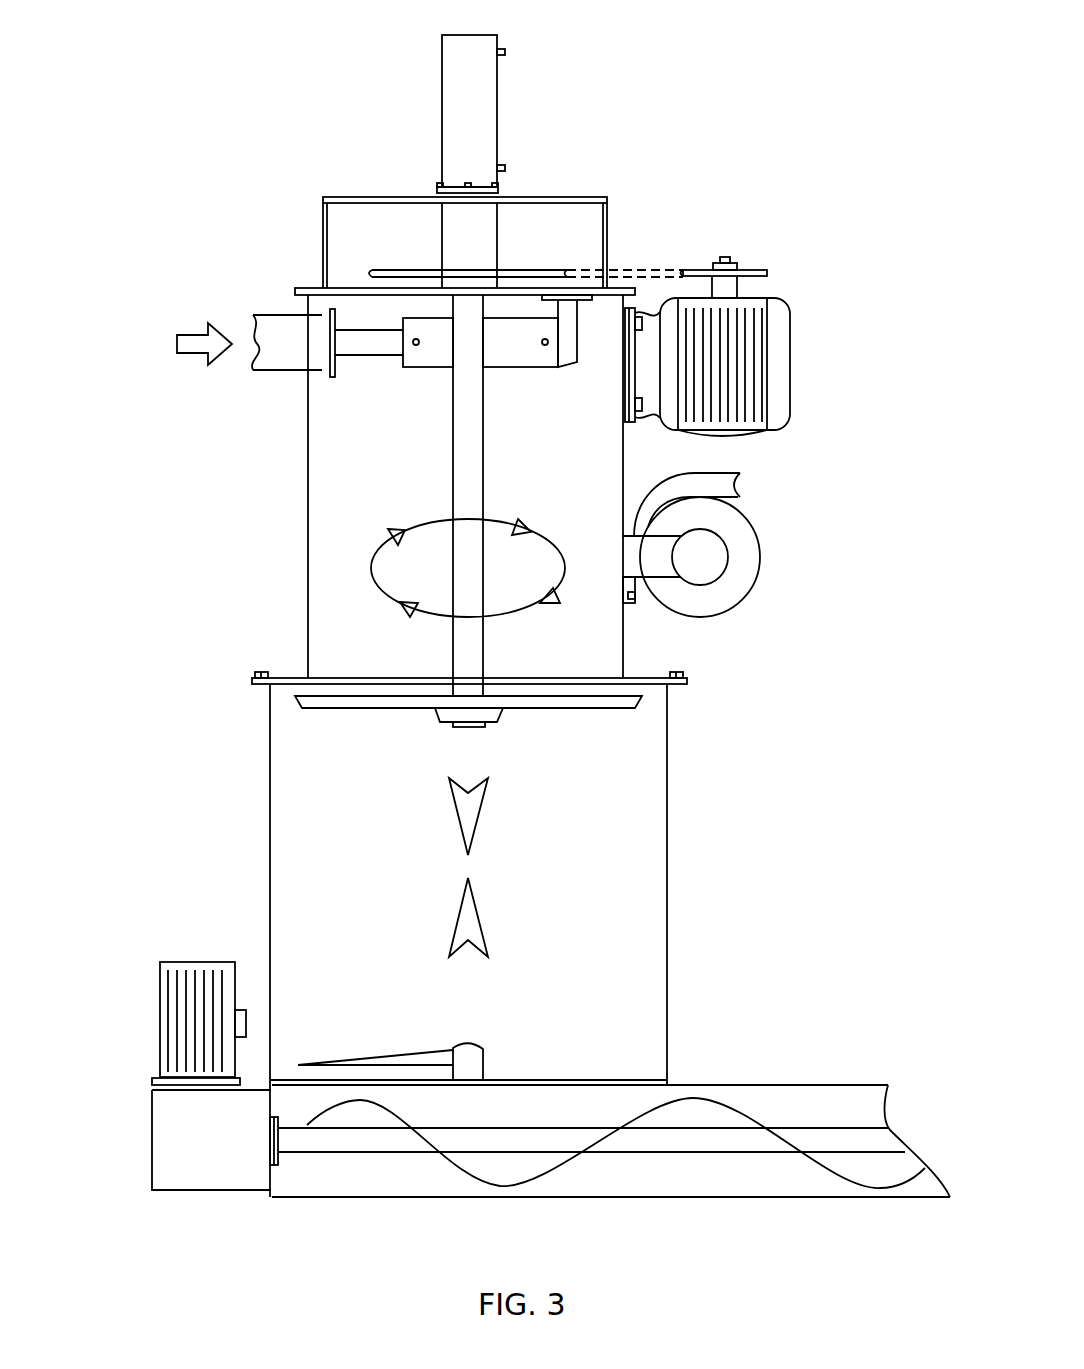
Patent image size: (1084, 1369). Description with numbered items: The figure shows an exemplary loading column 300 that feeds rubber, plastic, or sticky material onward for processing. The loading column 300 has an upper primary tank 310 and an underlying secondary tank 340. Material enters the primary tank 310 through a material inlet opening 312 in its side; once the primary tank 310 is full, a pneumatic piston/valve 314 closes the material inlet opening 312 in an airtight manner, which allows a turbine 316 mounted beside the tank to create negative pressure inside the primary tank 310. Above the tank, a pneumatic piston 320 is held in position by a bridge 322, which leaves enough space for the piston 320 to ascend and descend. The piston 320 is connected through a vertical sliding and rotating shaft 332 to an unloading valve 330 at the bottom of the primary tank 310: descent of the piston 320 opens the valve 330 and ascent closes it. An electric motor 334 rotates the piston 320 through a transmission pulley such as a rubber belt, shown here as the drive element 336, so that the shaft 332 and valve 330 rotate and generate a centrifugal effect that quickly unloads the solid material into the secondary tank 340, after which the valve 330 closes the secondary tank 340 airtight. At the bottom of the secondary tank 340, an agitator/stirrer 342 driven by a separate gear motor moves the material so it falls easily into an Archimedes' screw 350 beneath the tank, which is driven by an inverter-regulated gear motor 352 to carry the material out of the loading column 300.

The loading column 300 is at (101, 33).
The primary tank 310 is at (340, 520).
The material inlet opening 312 is at (252, 365).
The pneumatic piston/valve 314 is at (380, 343).
The turbine 316 is at (745, 553).
The pneumatic piston 320 is at (475, 81).
The bridge 322 is at (535, 215).
The unloading valve 330 is at (590, 703).
The vertical sliding and rotating shaft 332 is at (472, 243).
The electric motor 334 is at (760, 381).
The drive linkage 336 is at (667, 268).
The secondary tank 340 is at (590, 860).
The agitator/stirrer 342 is at (470, 1055).
The Archimedes' screw 350 is at (718, 1126).
The gear motor 352 is at (185, 995).